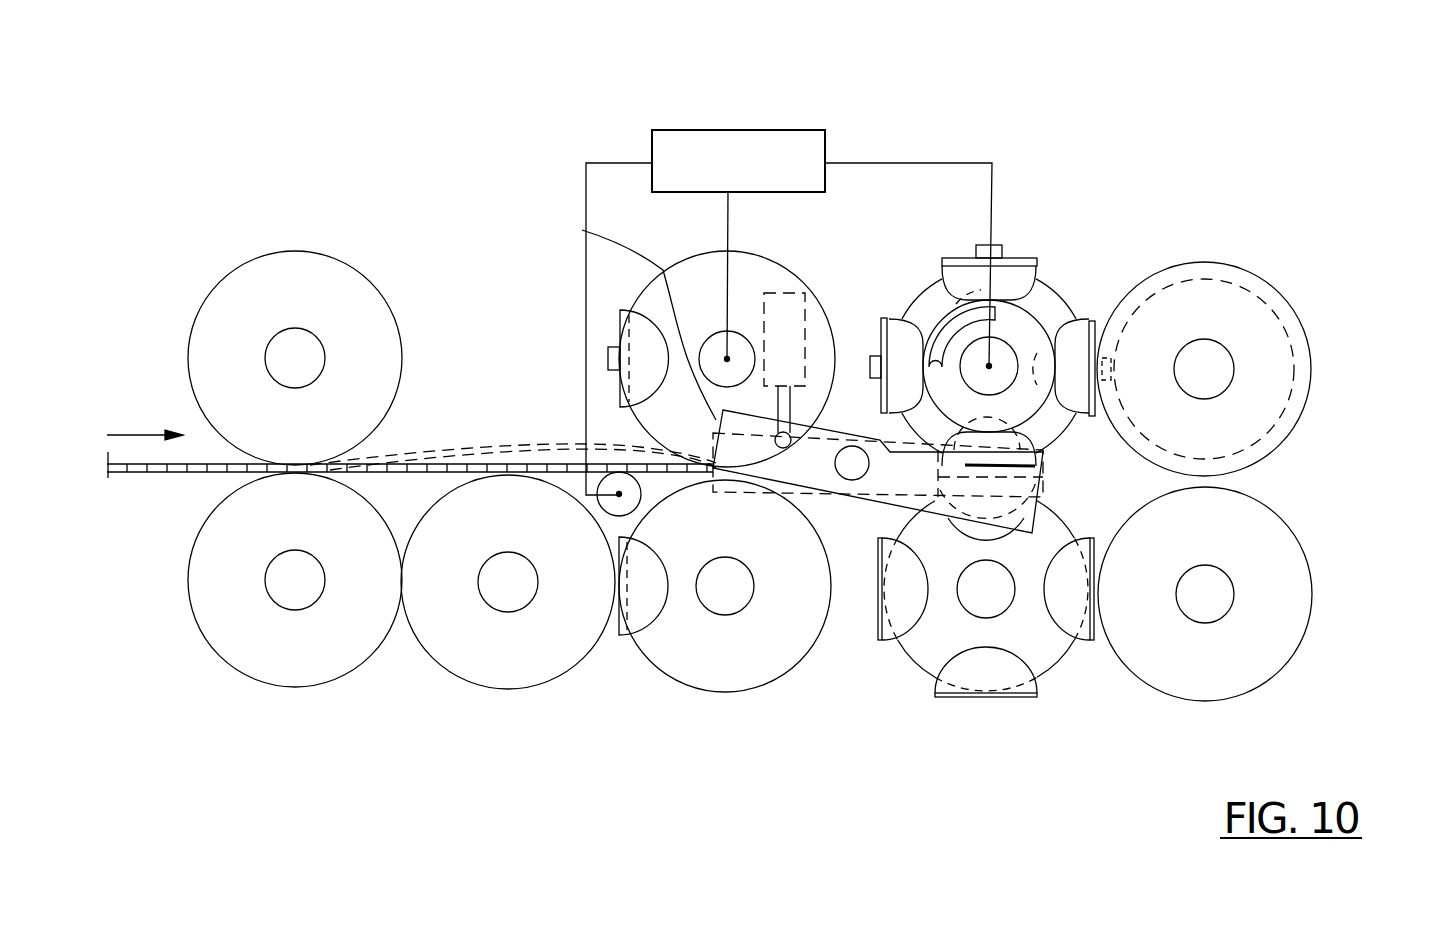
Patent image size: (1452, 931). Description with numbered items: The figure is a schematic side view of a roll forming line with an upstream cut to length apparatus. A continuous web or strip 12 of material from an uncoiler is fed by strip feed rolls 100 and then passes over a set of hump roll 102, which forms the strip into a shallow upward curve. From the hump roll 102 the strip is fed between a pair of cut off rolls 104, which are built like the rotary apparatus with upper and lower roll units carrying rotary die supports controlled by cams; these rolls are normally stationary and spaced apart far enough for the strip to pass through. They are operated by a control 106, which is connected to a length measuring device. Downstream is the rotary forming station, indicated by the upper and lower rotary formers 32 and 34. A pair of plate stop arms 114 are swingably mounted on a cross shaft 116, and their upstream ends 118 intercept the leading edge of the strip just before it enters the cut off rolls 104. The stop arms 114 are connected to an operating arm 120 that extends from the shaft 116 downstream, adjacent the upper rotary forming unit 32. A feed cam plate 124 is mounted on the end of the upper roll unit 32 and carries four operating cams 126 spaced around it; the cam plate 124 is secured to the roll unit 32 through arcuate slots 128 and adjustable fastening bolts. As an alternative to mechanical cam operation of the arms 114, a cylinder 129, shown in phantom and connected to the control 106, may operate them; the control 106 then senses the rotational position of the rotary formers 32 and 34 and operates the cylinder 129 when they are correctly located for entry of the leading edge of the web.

The web or strip 12 is at (130, 474).
The upper rotary former 32 is at (1064, 255).
The lower rotary former 34 is at (1078, 665).
The strip feed rolls 100 is at (268, 256).
The hump roll 102 is at (508, 680).
The cut off rolls 104 is at (697, 253).
The control 106 is at (808, 131).
The plate stop arms 114 is at (770, 470).
The cross shaft 116 is at (852, 462).
The upstream ends 118 is at (582, 230).
The operating arm 120 is at (1047, 493).
The feed cam plate 124 is at (1045, 322).
The operating cams 126 is at (1095, 366).
The arcuate slots 128 is at (975, 312).
The cylinder 129 is at (787, 292).